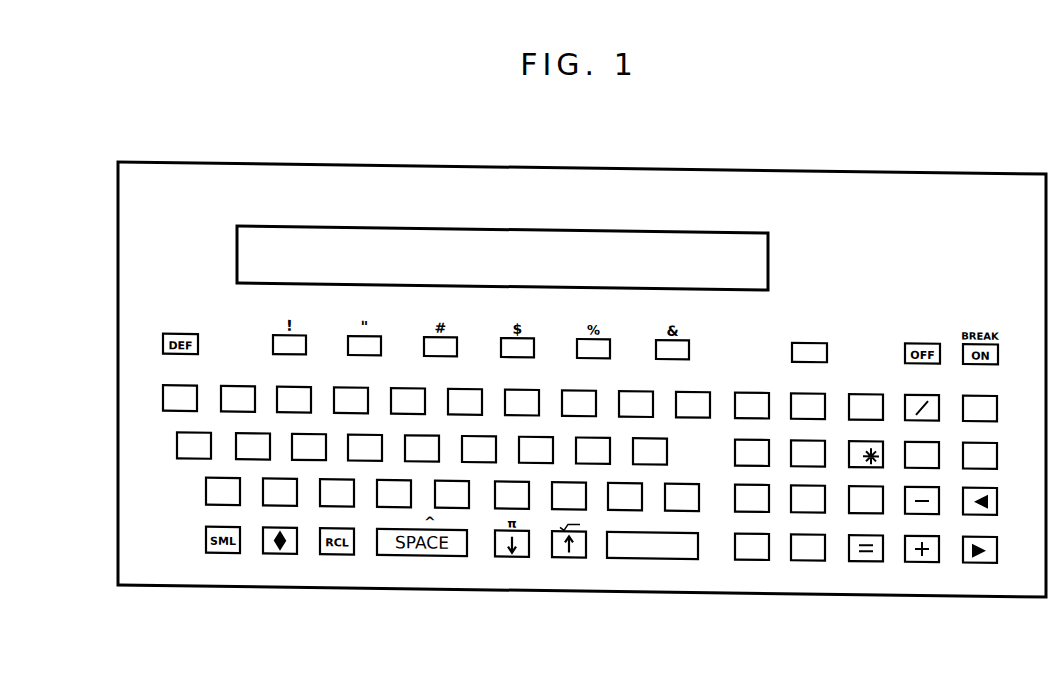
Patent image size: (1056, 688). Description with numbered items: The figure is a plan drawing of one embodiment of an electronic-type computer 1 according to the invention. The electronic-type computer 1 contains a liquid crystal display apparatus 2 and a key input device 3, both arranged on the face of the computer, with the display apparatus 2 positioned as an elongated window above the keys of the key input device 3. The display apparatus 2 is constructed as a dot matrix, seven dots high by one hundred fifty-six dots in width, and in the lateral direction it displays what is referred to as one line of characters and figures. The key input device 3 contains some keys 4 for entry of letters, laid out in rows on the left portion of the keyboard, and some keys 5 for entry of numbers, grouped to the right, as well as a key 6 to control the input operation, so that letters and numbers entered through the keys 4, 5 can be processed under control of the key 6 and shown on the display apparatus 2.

The electronic-type computer 1 is at (723, 189).
The liquid crystal display apparatus 2 is at (752, 257).
The key input device 3 is at (813, 328).
The keys for entry of letters 4 is at (183, 462).
The keys for entry of numbers 5 is at (842, 400).
The key to control the input operation 6 is at (658, 556).